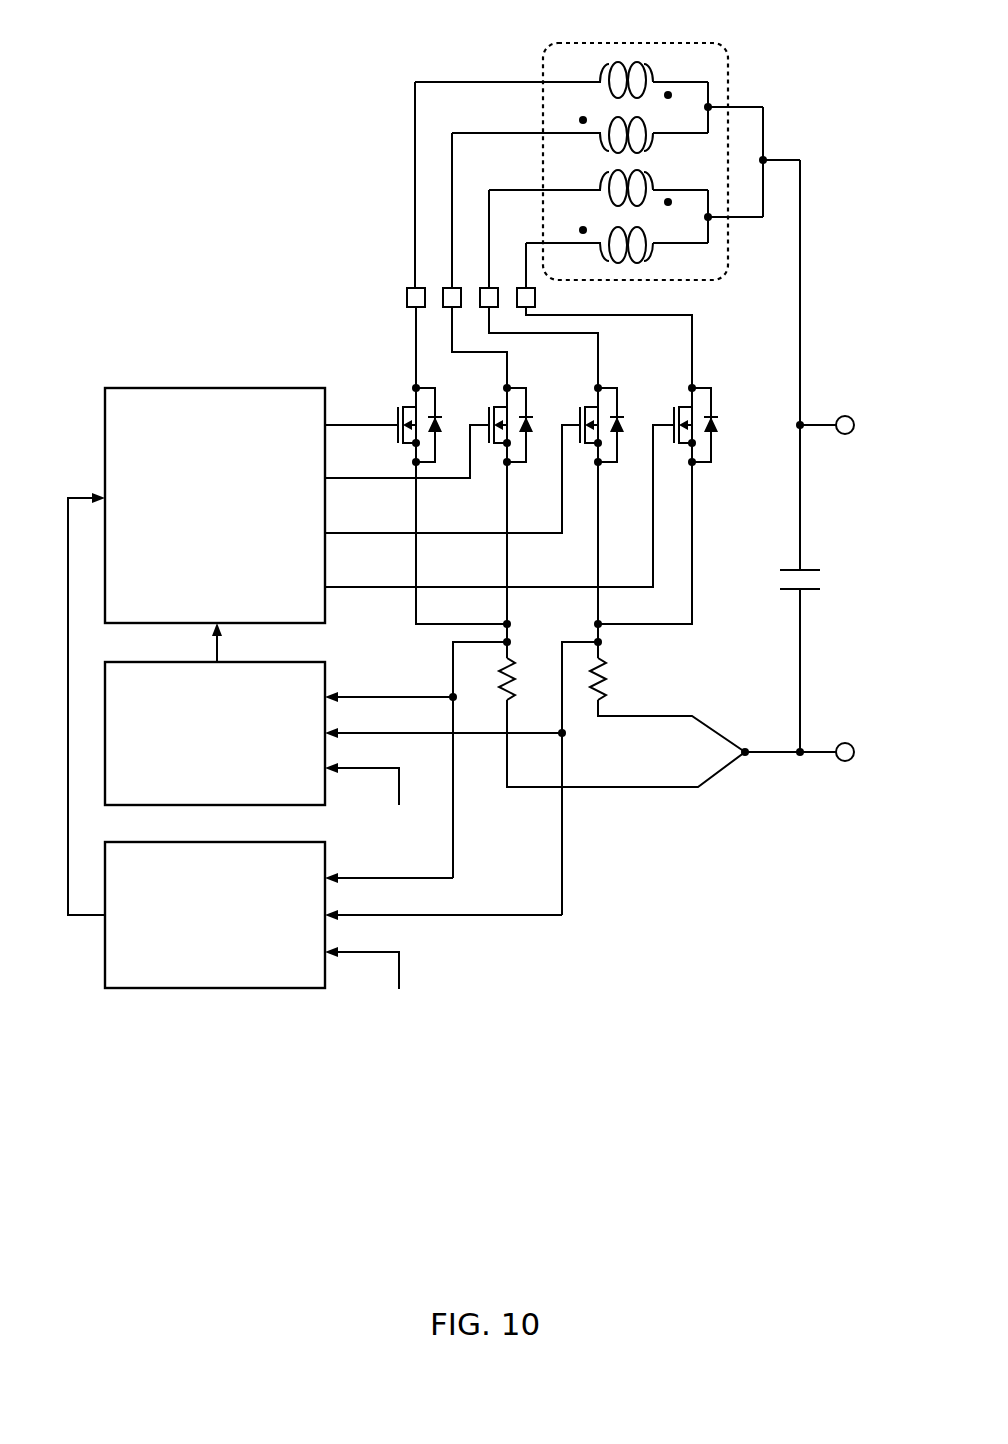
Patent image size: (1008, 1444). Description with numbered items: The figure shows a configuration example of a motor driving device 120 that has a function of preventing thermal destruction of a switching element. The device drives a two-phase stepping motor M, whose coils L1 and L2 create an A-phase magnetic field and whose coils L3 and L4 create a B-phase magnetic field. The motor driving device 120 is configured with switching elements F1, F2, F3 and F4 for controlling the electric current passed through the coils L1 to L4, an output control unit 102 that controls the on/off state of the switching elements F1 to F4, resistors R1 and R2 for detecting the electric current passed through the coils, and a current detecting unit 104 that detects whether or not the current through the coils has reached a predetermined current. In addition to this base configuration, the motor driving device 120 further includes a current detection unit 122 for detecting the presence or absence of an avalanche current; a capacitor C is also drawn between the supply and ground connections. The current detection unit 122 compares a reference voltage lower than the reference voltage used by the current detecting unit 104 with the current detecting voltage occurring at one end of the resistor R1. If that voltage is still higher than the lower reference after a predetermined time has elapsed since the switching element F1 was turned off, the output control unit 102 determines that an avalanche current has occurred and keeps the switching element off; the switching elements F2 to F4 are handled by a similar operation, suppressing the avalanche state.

The motor driving device 120 is at (301, 281).
The output control unit 102 is at (205, 388).
The current detecting unit 104 is at (325, 664).
The current detection unit 122 is at (103, 952).
The motor M is at (607, 144).
The coil L1 is at (561, 72).
The coil L2 is at (580, 141).
The coil L3 is at (598, 182).
The coil L4 is at (617, 251).
The switching element F1 is at (408, 413).
The switching element F2 is at (499, 413).
The switching element F3 is at (591, 413).
The switching element F4 is at (684, 413).
The resistor R1 is at (489, 679).
The resistor R2 is at (619, 679).
The capacitor C is at (805, 561).